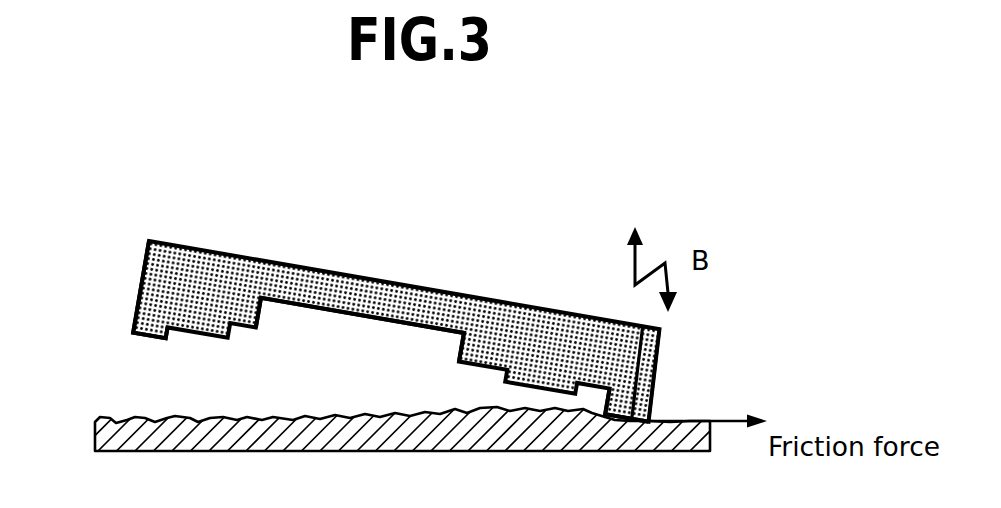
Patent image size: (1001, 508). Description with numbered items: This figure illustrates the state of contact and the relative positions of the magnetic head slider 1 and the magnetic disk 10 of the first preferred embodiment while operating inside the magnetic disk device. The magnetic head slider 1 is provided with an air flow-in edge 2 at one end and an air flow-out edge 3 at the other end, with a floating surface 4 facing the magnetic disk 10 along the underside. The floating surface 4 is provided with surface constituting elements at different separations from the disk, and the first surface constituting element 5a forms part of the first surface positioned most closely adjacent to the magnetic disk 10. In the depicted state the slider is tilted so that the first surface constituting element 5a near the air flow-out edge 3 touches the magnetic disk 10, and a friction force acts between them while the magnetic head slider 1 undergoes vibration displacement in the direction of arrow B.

The magnetic head slider 1 is at (194, 258).
The air flow-in edge 2 is at (140, 276).
The air flow-out edge 3 is at (662, 336).
The floating surface 4 is at (352, 350).
The first surface constituting element 5a is at (653, 397).
The magnetic disk 10 is at (183, 435).